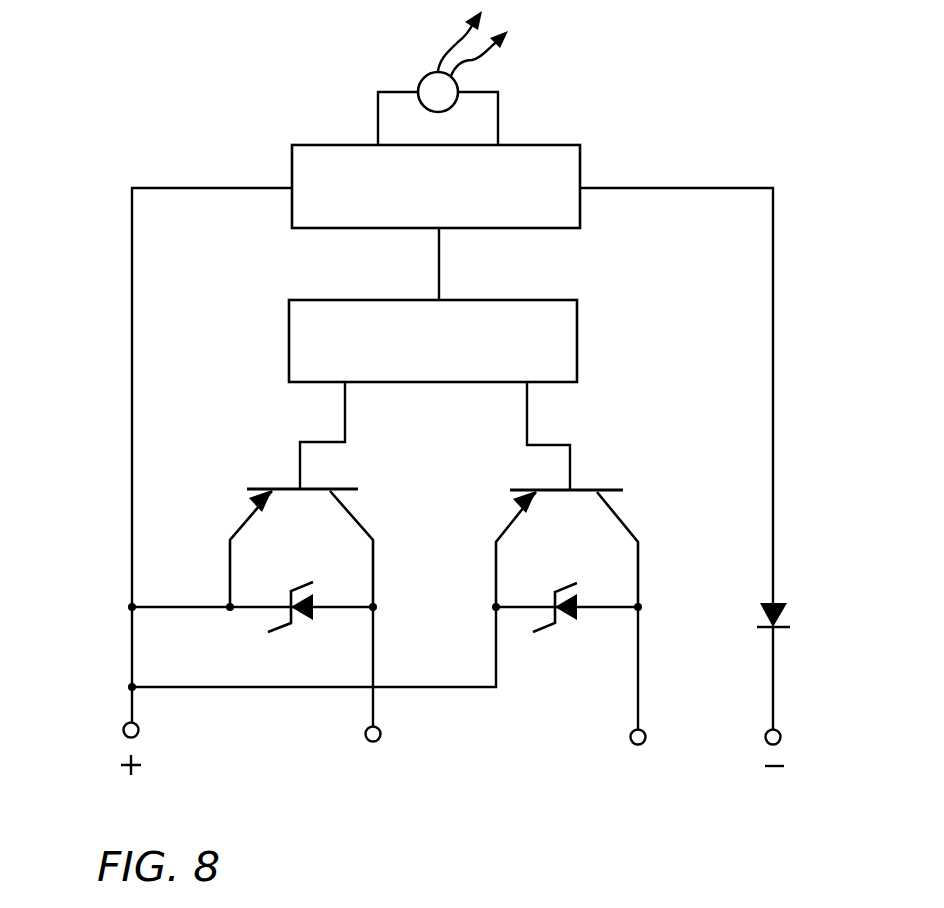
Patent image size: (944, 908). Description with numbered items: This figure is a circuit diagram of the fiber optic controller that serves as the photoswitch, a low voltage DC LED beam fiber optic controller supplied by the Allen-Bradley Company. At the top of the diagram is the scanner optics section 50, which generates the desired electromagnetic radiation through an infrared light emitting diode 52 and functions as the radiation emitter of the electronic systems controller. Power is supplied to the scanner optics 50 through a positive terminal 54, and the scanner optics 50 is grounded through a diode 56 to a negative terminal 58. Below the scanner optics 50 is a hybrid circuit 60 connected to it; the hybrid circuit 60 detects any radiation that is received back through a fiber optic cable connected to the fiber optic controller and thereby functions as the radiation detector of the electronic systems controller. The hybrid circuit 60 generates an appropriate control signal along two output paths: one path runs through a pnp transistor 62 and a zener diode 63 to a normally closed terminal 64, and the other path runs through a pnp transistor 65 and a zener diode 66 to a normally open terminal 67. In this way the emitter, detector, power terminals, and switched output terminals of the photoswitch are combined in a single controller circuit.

The scanner optics section 50 is at (580, 157).
The infrared light emitting diode 52 is at (458, 83).
The positive terminal 54 is at (122, 731).
The diode 56 is at (790, 613).
The negative terminal 58 is at (781, 736).
The hybrid circuit 60 is at (578, 330).
The pnp transistor 62 is at (247, 528).
The zener diode 63 is at (303, 623).
The normally closed terminal 64 is at (381, 733).
The pnp transistor 65 is at (617, 489).
The zener diode 66 is at (570, 623).
The normally open terminal 67 is at (646, 736).